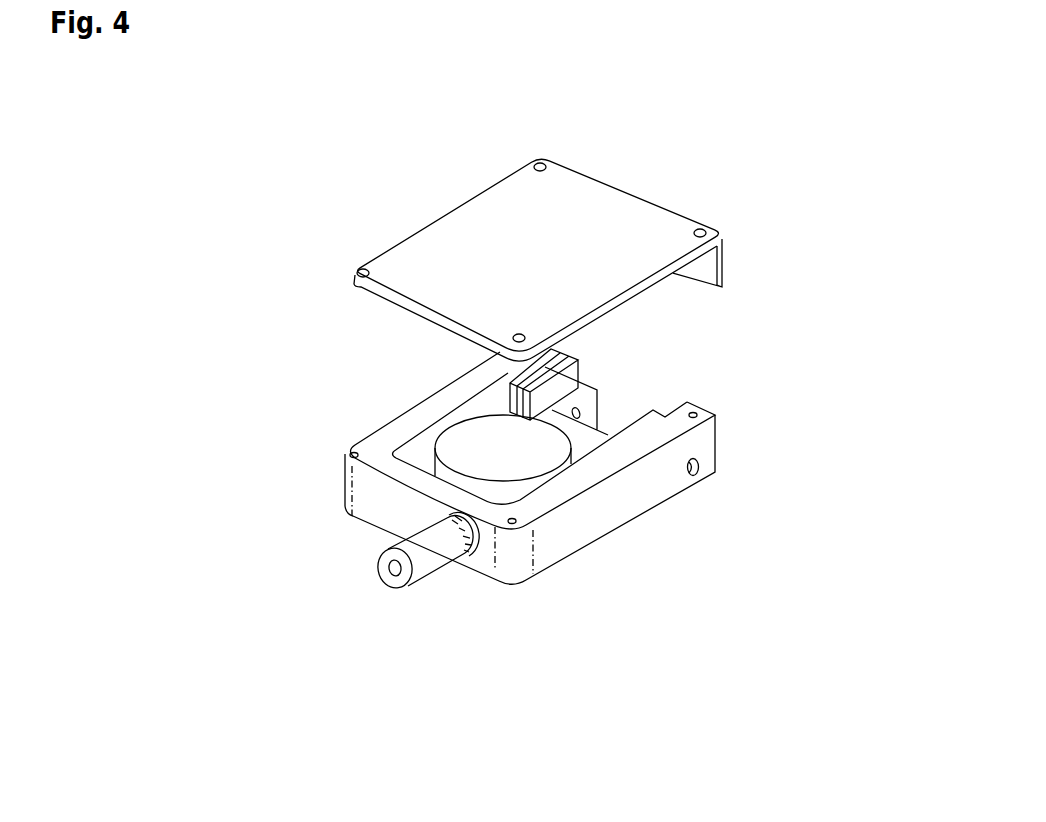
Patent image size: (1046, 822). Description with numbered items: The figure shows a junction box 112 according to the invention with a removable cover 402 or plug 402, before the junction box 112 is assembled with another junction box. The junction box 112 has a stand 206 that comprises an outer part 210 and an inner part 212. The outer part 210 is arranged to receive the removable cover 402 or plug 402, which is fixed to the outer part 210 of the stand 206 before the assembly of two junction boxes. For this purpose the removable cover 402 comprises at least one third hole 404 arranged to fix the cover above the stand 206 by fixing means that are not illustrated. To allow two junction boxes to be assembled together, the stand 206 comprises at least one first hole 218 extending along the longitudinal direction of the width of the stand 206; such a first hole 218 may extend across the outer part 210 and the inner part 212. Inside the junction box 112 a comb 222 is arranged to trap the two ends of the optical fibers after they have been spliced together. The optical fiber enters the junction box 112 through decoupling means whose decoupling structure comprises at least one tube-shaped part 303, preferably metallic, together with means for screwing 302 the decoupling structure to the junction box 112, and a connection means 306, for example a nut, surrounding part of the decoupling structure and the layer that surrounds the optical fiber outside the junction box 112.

The removable cover 402 is at (465, 228).
The third hole 404 is at (540, 163).
The comb 222 is at (573, 372).
The first hole 218 is at (580, 412).
The inner part 212 is at (645, 418).
The junction box 112 is at (592, 468).
The stand 206 is at (592, 468).
The outer part 210 is at (617, 504).
The connection means 306 is at (418, 567).
The tube-shaped part 303 is at (493, 580).
The means for screwing 302 is at (463, 553).